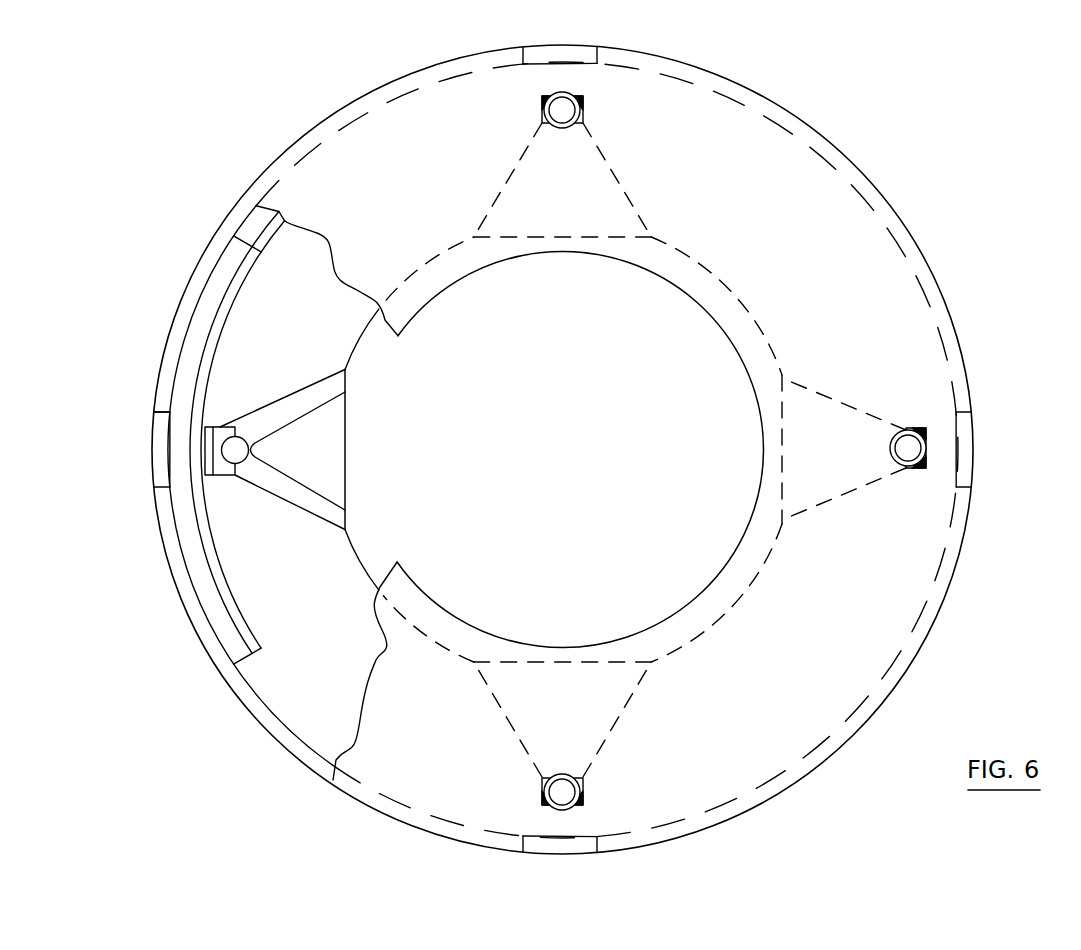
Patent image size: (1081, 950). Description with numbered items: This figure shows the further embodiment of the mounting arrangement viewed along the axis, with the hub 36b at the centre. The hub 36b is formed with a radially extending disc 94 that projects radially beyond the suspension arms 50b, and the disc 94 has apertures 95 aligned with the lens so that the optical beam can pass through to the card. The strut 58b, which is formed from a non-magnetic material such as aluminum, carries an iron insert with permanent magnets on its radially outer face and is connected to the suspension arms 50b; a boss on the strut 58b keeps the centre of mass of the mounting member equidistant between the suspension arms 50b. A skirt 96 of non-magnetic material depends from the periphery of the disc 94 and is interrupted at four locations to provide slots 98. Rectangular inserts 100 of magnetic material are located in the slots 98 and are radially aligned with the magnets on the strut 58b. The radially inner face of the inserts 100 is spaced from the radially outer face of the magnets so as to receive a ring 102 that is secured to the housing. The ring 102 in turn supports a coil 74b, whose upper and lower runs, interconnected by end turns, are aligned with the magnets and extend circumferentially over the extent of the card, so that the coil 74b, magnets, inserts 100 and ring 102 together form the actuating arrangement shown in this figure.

The hub 36b is at (437, 419).
The suspension arm 50b is at (303, 406).
The strut 58b is at (212, 421).
The coil 74b is at (224, 592).
The disc 94 is at (534, 494).
The aperture 95 is at (566, 101).
The skirt 96 is at (192, 289).
The slot 98 is at (163, 418).
The rectangular insert 100 is at (563, 50).
The ring 102 is at (813, 163).